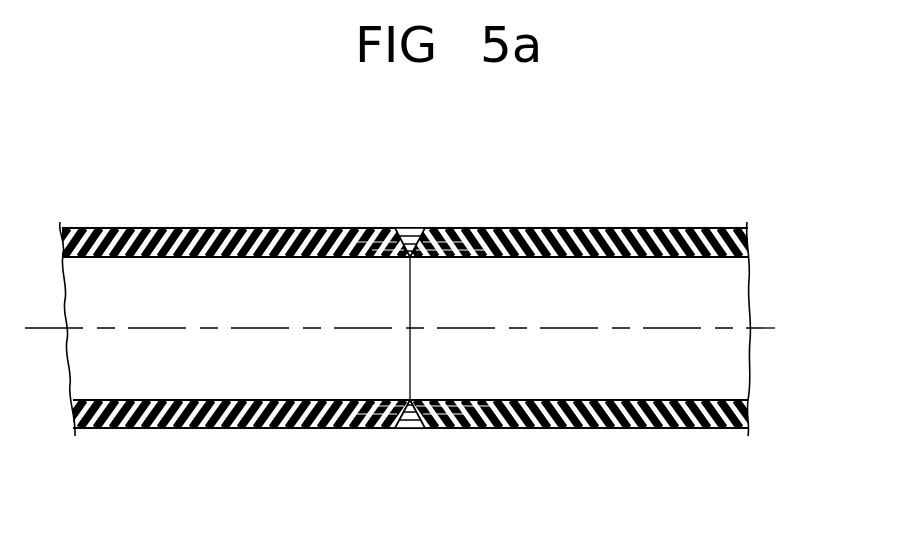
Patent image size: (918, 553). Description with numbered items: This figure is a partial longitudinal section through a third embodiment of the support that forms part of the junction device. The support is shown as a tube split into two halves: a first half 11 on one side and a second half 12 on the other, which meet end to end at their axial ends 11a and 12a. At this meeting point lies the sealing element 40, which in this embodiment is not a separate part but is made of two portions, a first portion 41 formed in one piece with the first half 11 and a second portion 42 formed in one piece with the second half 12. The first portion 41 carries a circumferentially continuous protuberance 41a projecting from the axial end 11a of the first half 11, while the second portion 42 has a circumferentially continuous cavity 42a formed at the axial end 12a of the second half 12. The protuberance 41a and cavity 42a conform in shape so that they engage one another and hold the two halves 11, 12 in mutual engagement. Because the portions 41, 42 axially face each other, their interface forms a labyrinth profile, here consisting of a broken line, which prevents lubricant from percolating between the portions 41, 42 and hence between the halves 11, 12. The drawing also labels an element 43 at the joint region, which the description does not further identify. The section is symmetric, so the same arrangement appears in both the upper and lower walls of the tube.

The first half 11 is at (645, 228).
The axial end of the first half 11a is at (430, 258).
The second half 12 is at (166, 228).
The axial end of the second half 12a is at (400, 258).
The sealing element 40 is at (372, 267).
The first portion 41 is at (425, 228).
The protuberance 41a is at (485, 228).
The second portion 42 is at (367, 228).
The cavity 42a is at (394, 228).
The weld 43 is at (410, 228).